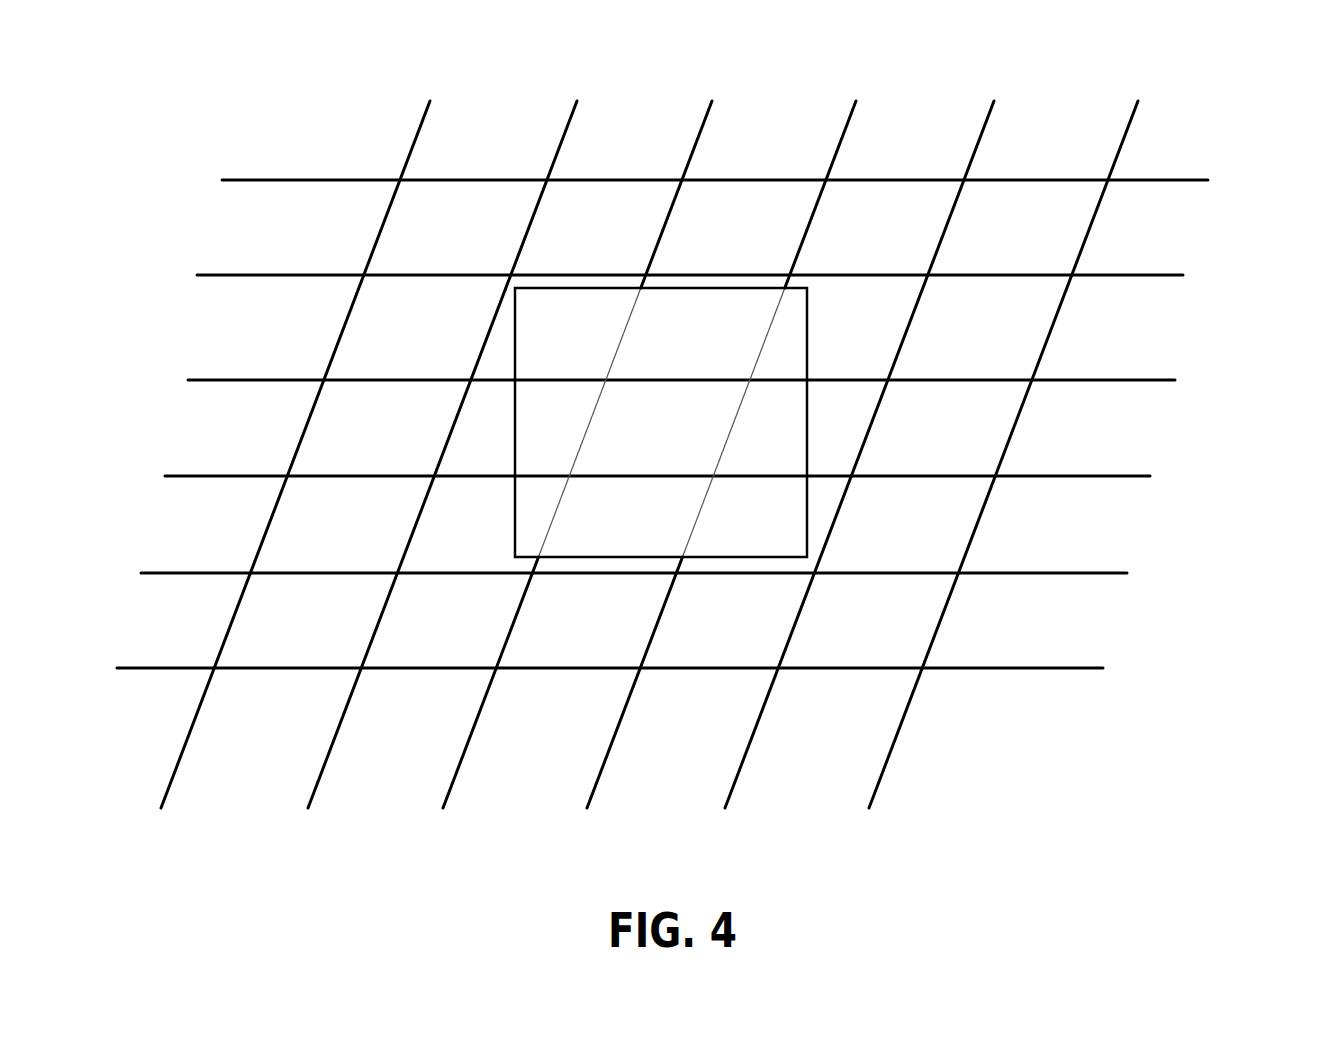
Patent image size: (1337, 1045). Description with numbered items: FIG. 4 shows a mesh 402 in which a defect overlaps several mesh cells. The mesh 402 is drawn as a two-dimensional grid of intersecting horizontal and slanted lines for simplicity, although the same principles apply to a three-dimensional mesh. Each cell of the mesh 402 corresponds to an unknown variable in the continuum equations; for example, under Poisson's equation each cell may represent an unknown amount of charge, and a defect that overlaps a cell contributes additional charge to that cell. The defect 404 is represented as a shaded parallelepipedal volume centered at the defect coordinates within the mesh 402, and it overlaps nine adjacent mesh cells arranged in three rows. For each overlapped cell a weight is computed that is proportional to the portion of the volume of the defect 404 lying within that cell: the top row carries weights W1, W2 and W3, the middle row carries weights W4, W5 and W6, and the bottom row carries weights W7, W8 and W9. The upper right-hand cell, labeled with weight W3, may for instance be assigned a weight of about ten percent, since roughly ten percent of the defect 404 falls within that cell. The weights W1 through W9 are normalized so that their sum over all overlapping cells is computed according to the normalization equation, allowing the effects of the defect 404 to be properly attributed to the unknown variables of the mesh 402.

The mesh 402 is at (1278, 108).
The defect 404 is at (705, 288).
The weight W1 is at (578, 334).
The weight W2 is at (713, 334).
The weight W3 is at (835, 334).
The weight W4 is at (550, 428).
The weight W5 is at (675, 428).
The weight W6 is at (800, 428).
The weight W7 is at (510, 516).
The weight W8 is at (630, 516).
The weight W9 is at (753, 516).